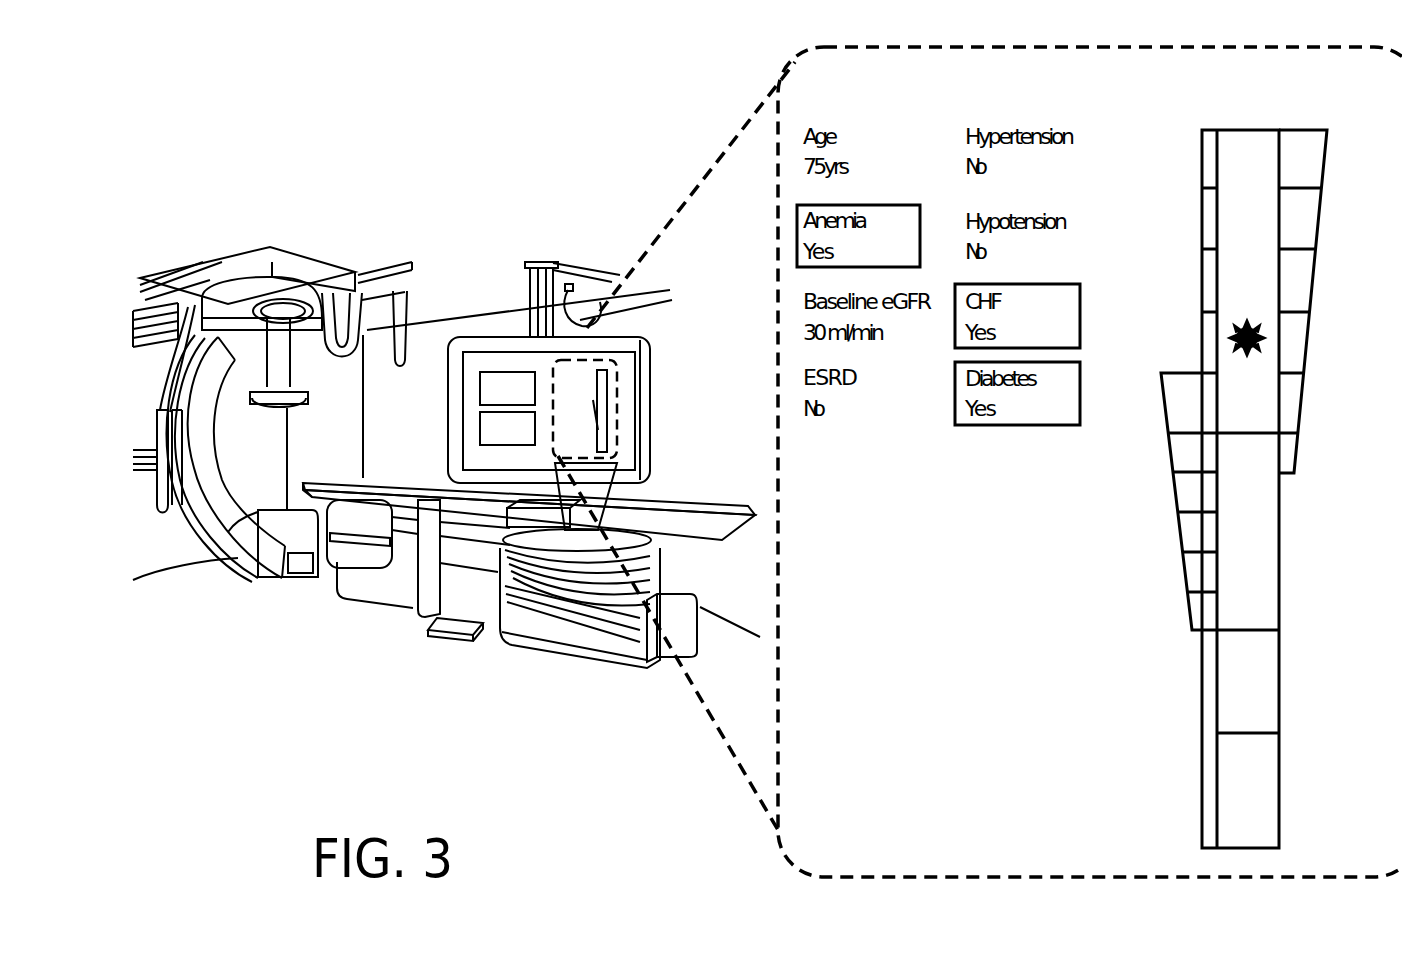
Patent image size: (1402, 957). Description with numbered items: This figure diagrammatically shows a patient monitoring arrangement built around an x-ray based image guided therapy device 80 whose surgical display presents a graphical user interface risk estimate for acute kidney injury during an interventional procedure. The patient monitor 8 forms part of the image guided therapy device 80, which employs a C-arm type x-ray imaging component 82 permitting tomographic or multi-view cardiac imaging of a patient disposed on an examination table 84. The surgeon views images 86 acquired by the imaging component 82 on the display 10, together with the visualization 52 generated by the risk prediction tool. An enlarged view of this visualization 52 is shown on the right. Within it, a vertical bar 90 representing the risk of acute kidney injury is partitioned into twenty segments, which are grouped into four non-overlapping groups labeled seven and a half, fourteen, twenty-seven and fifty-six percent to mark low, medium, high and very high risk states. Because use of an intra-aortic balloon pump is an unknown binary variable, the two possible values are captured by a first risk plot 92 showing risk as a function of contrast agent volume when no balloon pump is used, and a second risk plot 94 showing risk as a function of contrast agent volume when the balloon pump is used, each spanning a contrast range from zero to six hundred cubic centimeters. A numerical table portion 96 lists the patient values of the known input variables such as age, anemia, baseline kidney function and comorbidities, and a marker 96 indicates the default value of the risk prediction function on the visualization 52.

The image guided therapy device 80 is at (190, 224).
The C-arm type x-ray imaging component 82 is at (228, 533).
The examination table 84 is at (405, 480).
The images 86 is at (490, 430).
The display 10 is at (540, 383).
The patient monitor 8 is at (652, 362).
The visualization 52 is at (793, 63).
The vertical bar 90 is at (1202, 153).
The first risk plot 92 is at (1193, 630).
The second risk plot 94 is at (1290, 474).
The numerical table portion 96 is at (945, 446).